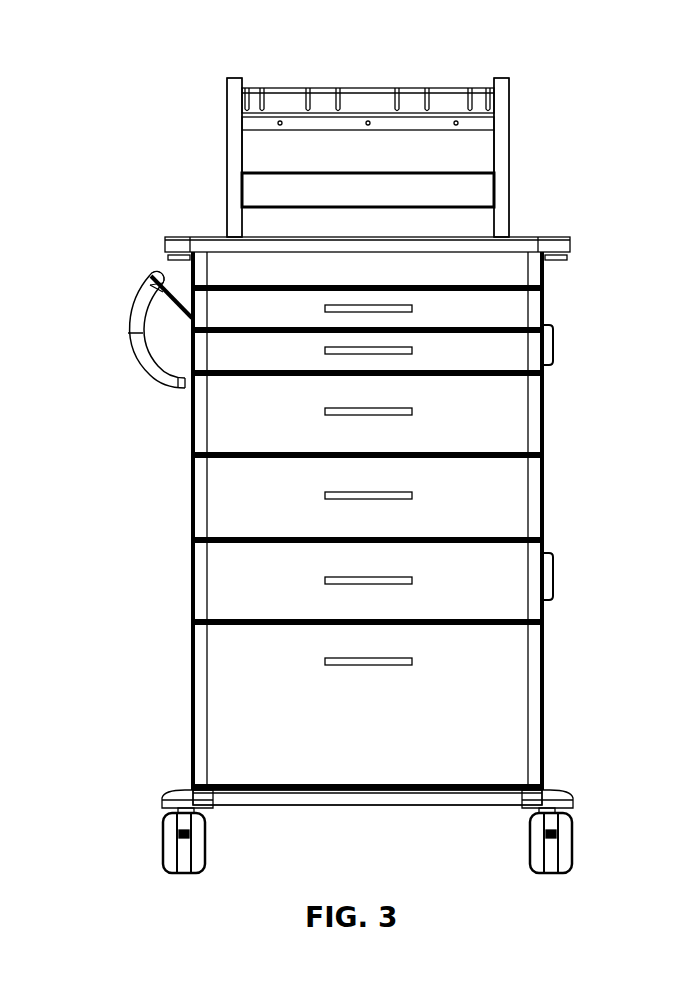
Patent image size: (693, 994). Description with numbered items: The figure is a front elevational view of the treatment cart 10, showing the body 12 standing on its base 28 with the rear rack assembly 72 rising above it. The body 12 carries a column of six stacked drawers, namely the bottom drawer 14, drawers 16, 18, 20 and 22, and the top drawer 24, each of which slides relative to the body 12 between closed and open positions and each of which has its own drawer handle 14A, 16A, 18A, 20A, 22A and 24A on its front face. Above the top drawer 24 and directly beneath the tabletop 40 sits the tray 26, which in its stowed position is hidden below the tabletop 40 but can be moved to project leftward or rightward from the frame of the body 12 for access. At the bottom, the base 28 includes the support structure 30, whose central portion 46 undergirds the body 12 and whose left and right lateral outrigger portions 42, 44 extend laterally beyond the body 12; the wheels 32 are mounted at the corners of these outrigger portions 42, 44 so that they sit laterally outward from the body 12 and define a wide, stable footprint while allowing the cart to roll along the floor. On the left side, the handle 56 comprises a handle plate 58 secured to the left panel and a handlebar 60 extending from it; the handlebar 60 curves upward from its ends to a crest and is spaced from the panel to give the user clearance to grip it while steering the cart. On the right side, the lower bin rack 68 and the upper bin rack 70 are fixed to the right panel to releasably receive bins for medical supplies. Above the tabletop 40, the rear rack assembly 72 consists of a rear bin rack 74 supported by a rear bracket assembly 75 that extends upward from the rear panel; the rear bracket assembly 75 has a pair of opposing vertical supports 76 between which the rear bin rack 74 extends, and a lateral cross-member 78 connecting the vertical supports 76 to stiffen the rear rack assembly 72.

The treatment cart 10 is at (90, 88).
The body 12 is at (75, 478).
The bottom drawer 14 is at (235, 650).
The drawer handle 14A is at (330, 664).
The drawer 16 is at (235, 570).
The drawer handle 16A is at (330, 583).
The drawer 18 is at (235, 487).
The drawer handle 18A is at (330, 498).
The drawer 20 is at (235, 410).
The drawer handle 20A is at (325, 413).
The drawer 22 is at (510, 347).
The drawer handle 22A is at (395, 348).
The top drawer 24 is at (500, 307).
The drawer handle 24A is at (395, 305).
The tray 26 is at (553, 262).
The base 28 is at (135, 802).
The support structure 30 is at (348, 808).
The wheels 32 is at (208, 845).
The tabletop 40 is at (556, 236).
The left lateral outrigger portion 42 is at (182, 790).
The right lateral outrigger portion 44 is at (575, 800).
The central portion 46 is at (422, 801).
The handle 56 is at (122, 333).
The handle plate 58 is at (180, 316).
The handlebar 60 is at (143, 290).
The lower bin rack 68 is at (553, 577).
The upper bin rack 70 is at (553, 367).
The rear rack assembly 72 is at (200, 106).
The rear bin rack 74 is at (371, 97).
The rear bracket assembly 75 is at (225, 193).
The vertical supports 76 is at (232, 148).
The lateral cross-member 78 is at (331, 182).